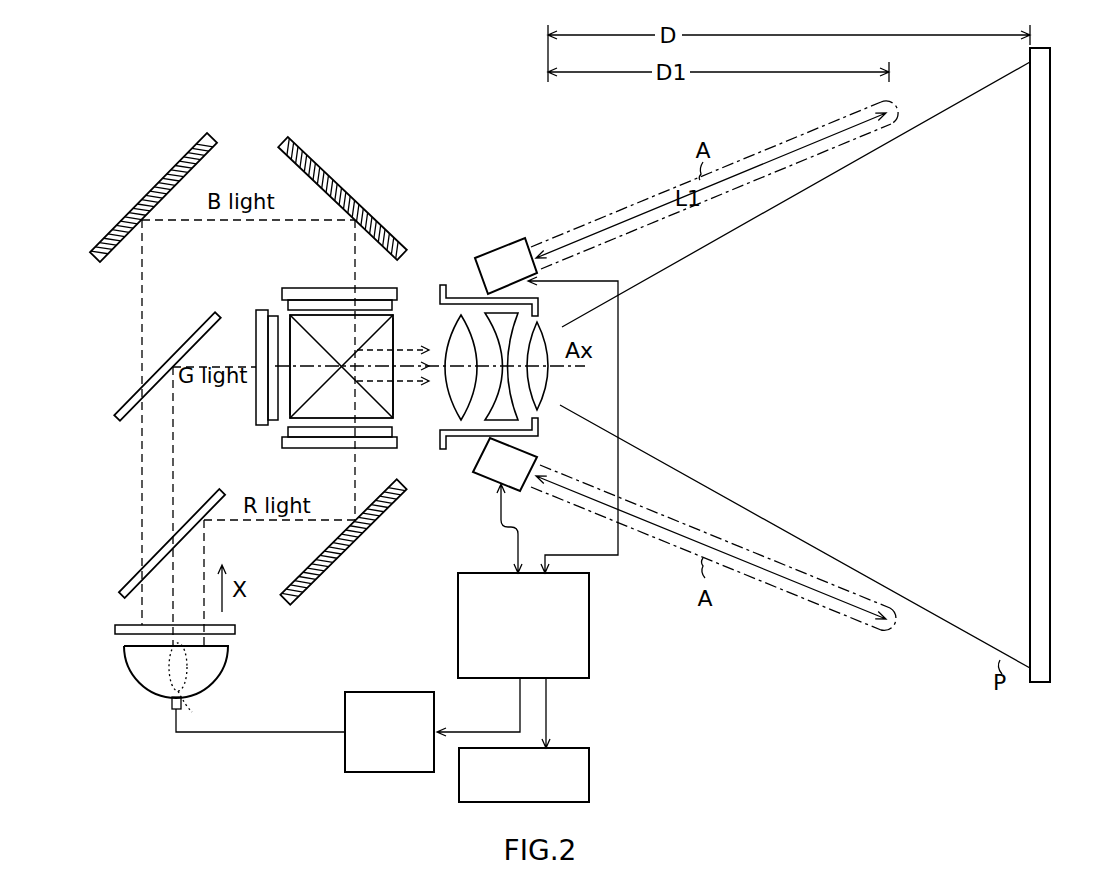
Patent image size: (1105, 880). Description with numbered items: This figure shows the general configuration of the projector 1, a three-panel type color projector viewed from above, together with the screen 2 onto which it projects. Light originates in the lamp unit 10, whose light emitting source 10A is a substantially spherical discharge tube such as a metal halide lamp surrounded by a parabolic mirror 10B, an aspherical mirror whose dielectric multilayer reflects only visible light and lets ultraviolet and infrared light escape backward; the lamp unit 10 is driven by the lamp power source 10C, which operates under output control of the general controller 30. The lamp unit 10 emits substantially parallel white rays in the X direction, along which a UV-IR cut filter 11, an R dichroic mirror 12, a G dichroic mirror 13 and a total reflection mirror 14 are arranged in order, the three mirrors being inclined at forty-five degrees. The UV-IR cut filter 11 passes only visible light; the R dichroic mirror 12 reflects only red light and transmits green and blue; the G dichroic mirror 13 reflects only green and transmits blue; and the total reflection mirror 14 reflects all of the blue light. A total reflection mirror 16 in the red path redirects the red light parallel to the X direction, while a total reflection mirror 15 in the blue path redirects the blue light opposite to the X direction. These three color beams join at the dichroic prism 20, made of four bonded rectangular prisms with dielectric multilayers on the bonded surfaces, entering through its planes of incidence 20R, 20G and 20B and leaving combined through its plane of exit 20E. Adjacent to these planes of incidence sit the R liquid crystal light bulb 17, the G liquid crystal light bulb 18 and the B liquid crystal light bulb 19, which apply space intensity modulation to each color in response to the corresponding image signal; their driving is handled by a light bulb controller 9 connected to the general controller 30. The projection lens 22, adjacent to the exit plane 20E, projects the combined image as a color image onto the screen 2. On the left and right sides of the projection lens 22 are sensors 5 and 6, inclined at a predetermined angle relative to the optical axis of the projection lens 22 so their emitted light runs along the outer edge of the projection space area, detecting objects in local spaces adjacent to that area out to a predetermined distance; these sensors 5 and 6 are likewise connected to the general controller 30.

The projector 1 is at (410, 91).
The screen 2 is at (1050, 366).
The sensor 5 is at (506, 238).
The sensor 6 is at (525, 486).
The light bulb controller 9 is at (589, 785).
The lamp unit 10 is at (203, 686).
The light emitting source 10A is at (192, 712).
The parabolic mirror 10B is at (125, 650).
The lamp power source 10C is at (413, 772).
The UV-IR cut filter 11 is at (236, 630).
The R dichroic mirror 12 is at (121, 598).
The G dichroic mirror 13 is at (128, 396).
The total reflection mirror 14 is at (122, 228).
The total reflection mirror 15 is at (343, 192).
The total reflection mirror 16 is at (355, 548).
The R liquid crystal light bulb 17 is at (402, 448).
The G liquid crystal light bulb 18 is at (264, 428).
The B liquid crystal light bulb 19 is at (291, 288).
The dichroic prism 20 is at (304, 378).
The plane of incidence 20B is at (343, 315).
The plane of incidence 20R is at (339, 418).
The plane of incidence 20G is at (283, 421).
The plane of exit 20E is at (393, 397).
The projection lens 22 is at (444, 284).
The general controller 30 is at (589, 656).